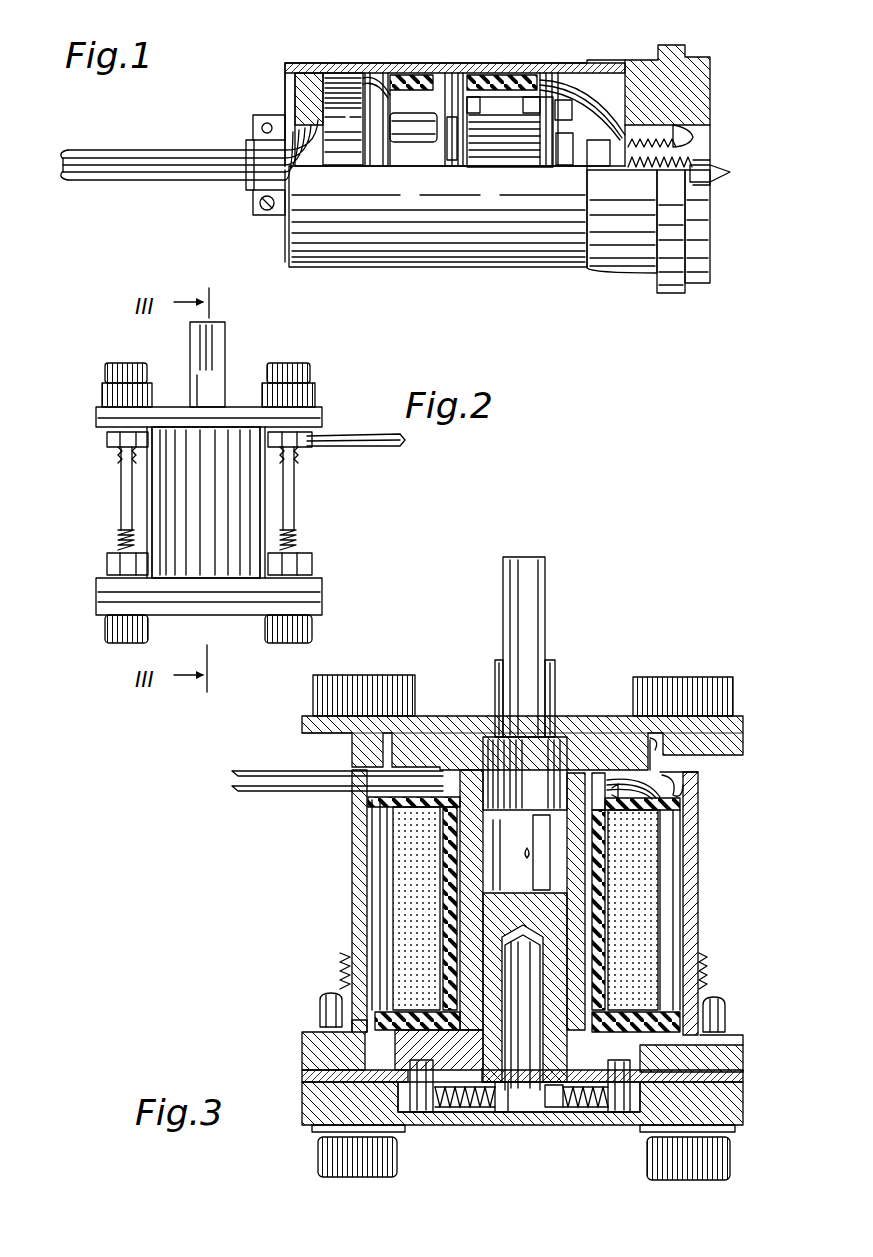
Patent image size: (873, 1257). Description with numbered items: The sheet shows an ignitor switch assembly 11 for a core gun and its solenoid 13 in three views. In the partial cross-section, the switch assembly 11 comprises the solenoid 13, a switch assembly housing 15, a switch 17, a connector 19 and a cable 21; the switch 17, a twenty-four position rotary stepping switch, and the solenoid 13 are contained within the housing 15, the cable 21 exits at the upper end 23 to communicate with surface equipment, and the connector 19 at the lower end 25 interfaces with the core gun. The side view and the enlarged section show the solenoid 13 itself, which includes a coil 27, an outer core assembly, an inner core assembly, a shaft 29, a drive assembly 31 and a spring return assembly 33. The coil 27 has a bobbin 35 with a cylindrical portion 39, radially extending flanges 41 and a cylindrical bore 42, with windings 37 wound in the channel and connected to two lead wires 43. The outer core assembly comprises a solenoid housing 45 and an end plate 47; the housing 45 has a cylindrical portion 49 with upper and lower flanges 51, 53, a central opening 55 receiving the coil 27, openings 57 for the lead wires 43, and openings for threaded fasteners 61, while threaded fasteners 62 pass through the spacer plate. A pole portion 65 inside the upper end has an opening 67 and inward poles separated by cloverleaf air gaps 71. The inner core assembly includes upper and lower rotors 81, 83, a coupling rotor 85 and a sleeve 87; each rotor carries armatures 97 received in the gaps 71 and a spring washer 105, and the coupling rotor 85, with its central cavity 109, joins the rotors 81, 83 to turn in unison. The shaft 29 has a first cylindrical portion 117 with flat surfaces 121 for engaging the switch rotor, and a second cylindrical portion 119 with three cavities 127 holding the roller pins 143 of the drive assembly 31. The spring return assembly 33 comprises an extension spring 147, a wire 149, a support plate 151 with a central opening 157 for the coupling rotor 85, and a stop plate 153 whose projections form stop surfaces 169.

In FIG. 1, the switch assembly 11 is at (318, 43).
In FIG. 1, the solenoid 13 is at (512, 104).
In FIG. 2, the solenoid 13 is at (117, 479).
In FIG. 3, the solenoid 13 is at (652, 603).
In FIG. 1, the switch assembly housing 15 is at (392, 68).
In FIG. 1, the switch 17 is at (422, 100).
In FIG. 1, the connector 19 is at (662, 88).
In FIG. 1, the cable 21 is at (170, 158).
In FIG. 1, the upper end 23 is at (288, 242).
In FIG. 1, the lower end 25 is at (617, 253).
In FIG. 3, the coil 27 is at (407, 833).
In FIG. 2, the shaft 29 is at (300, 350).
In FIG. 3, the shaft 29 is at (530, 550).
In FIG. 3, the drive assembly 31 is at (512, 725).
In FIG. 3, the spring return assembly 33 is at (583, 1115).
In FIG. 3, the bobbin 35 is at (443, 900).
In FIG. 3, the windings 37 is at (400, 872).
In FIG. 3, the cylindrical portion 39 is at (447, 947).
In FIG. 3, the flanges 41 is at (400, 800).
In FIG. 3, the cylindrical bore 42 is at (468, 800).
In FIG. 2, the lead wires 43 is at (366, 452).
In FIG. 3, the lead wires 43 is at (268, 792).
In FIG. 2, the solenoid housing 45 is at (150, 515).
In FIG. 3, the solenoid housing 45 is at (360, 922).
In FIG. 2, the end plate 47 is at (97, 593).
In FIG. 3, the end plate 47 is at (328, 1062).
In FIG. 2, the cylindrical portion 49 is at (137, 500).
In FIG. 3, the cylindrical portion 49 is at (360, 843).
In FIG. 2, the upper flange 51 is at (100, 420).
In FIG. 3, the upper flange 51 is at (343, 740).
In FIG. 2, the lower flange 53 is at (100, 582).
In FIG. 3, the lower flange 53 is at (330, 1043).
In FIG. 3, the central opening 55 is at (362, 966).
In FIG. 3, the openings 57 is at (385, 770).
In FIG. 2, the threaded fasteners 61 is at (105, 628).
In FIG. 3, the threaded fasteners 61 is at (332, 1155).
In FIG. 2, the threaded fasteners 62 is at (105, 375).
In FIG. 3, the threaded fasteners 62 is at (523, 695).
In FIG. 3, the pole portion 65 is at (668, 788).
In FIG. 3, the opening 67 is at (662, 808).
In FIG. 3, the air gaps 71 is at (658, 752).
In FIG. 3, the upper rotor 81 is at (574, 848).
In FIG. 3, the lower rotor 83 is at (707, 1000).
In FIG. 3, the coupling rotor 85 is at (600, 950).
In FIG. 3, the sleeve 87 is at (586, 884).
In FIG. 3, the armatures 97 is at (640, 740).
In FIG. 3, the spring washer 105 is at (556, 832).
In FIG. 3, the central cavity 109 is at (545, 972).
In FIG. 3, the first cylindrical portion 117 is at (512, 583).
In FIG. 3, the second cylindrical portion 119 is at (514, 830).
In FIG. 3, the flat surfaces 121 is at (547, 607).
In FIG. 3, the cavities 127 is at (627, 747).
In FIG. 3, the roller pins 143 is at (582, 920).
In FIG. 3, the spring 147 is at (603, 1112).
In FIG. 3, the wire 149 is at (525, 1112).
In FIG. 3, the support plate 151 is at (712, 1077).
In FIG. 3, the stop plate 153 is at (712, 1116).
In FIG. 3, the central opening 157 is at (500, 1095).
In FIG. 3, the stop surfaces 169 is at (403, 1093).